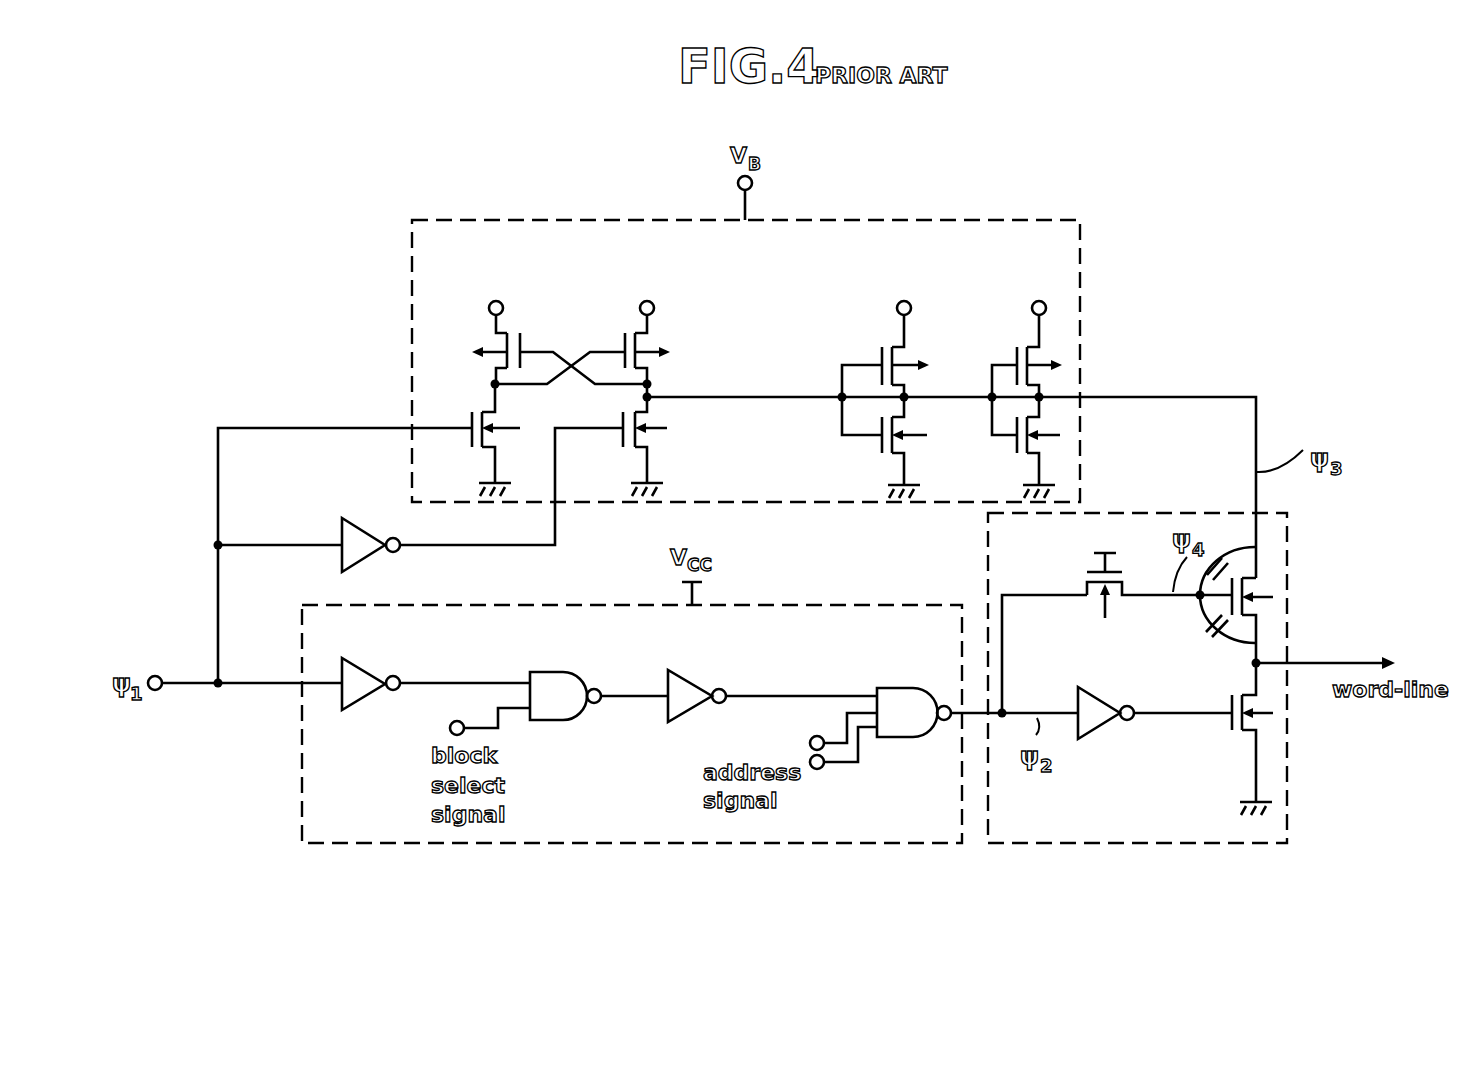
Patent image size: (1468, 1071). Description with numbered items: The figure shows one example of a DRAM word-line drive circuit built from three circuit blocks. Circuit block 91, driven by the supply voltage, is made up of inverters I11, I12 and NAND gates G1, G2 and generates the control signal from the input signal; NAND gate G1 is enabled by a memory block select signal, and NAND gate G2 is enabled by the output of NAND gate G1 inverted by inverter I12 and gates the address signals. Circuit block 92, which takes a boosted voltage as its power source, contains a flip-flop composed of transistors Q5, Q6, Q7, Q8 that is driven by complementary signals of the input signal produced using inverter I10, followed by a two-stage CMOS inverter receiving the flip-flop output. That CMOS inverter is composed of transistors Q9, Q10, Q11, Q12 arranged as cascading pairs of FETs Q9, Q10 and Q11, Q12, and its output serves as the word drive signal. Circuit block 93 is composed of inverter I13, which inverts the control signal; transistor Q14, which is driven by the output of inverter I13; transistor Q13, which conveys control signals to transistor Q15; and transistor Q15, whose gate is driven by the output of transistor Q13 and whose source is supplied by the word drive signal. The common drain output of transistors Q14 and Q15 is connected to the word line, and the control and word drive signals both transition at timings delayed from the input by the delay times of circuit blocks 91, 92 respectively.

The transistor Q5 is at (485, 423).
The transistor Q6 is at (643, 438).
The transistor Q7 is at (493, 340).
The transistor Q8 is at (647, 342).
The transistor Q9 is at (868, 442).
The transistor Q10 is at (890, 346).
The transistor Q11 is at (1048, 443).
The transistor Q12 is at (1047, 355).
The transistor Q13 is at (1097, 595).
The transistor Q14 is at (1270, 722).
The transistor Q15 is at (1262, 607).
The inverter I10 is at (363, 522).
The inverter I11 is at (363, 668).
The inverter I12 is at (693, 680).
The inverter I13 is at (1097, 688).
The NAND gate G1 is at (572, 672).
The NAND gate G2 is at (893, 688).
The circuit block 91 is at (865, 845).
The circuit block 92 is at (780, 220).
The circuit block 93 is at (1145, 845).